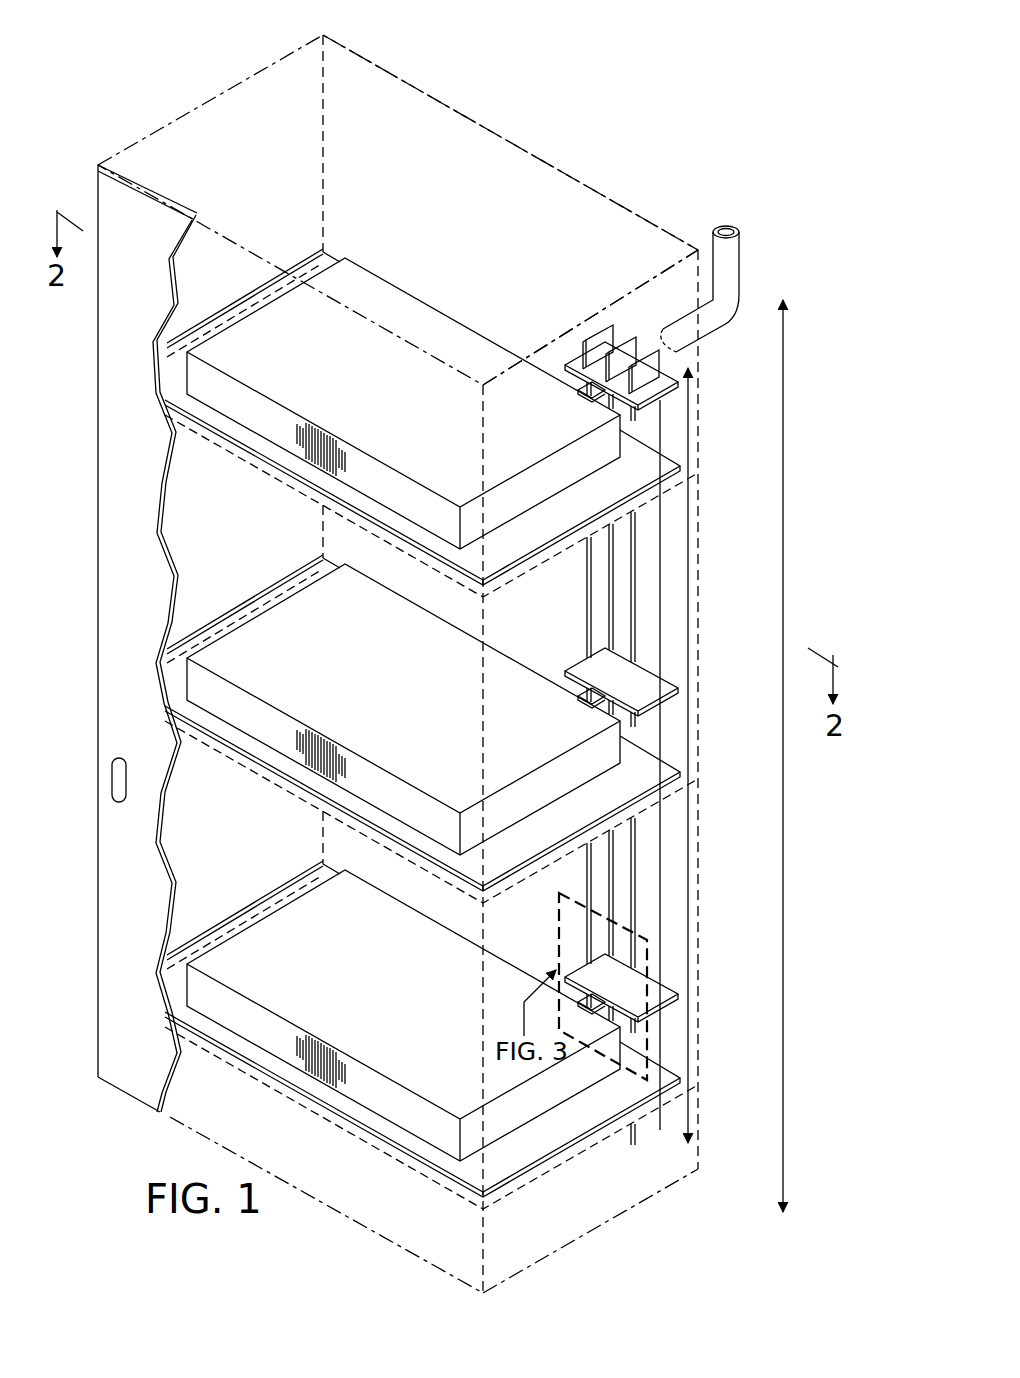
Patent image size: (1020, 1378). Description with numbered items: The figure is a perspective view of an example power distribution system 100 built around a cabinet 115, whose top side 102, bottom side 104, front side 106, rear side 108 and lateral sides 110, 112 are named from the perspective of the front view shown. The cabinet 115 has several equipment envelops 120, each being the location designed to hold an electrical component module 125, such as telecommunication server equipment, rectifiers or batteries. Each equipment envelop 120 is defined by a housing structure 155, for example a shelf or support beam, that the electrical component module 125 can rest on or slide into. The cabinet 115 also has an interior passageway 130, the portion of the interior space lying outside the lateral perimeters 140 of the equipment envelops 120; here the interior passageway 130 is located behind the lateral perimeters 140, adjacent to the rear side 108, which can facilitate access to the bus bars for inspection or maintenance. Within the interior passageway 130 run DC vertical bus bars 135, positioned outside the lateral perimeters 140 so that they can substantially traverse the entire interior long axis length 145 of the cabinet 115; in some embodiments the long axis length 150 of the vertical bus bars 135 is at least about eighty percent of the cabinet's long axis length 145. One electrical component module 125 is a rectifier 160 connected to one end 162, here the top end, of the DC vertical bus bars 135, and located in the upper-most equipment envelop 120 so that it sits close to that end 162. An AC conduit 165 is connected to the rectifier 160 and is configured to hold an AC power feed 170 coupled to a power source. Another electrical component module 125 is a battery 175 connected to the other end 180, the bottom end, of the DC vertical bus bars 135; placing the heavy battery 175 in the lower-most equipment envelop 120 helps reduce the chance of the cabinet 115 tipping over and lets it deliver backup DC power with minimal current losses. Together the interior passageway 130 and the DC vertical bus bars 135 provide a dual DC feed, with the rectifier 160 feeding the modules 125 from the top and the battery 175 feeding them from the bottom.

The power distribution system 100 is at (718, 92).
The top side 102 is at (272, 78).
The bottom side 104 is at (362, 1207).
The front side 106 is at (132, 1083).
The rear side 108 is at (445, 127).
The lateral side 110 is at (202, 127).
The lateral side 112 is at (592, 1230).
The cabinet 115 is at (545, 166).
The equipment envelop 120 is at (312, 474).
The electrical component module 125 is at (403, 702).
The interior passageway 130 is at (210, 278).
The DC vertical bus bars 135 is at (597, 606).
The lateral perimeter 140 is at (245, 461).
The interior long axis length 145 is at (786, 930).
The long axis length 150 is at (690, 564).
The housing structure 155 is at (423, 708).
The rectifier 160 is at (423, 398).
The end of the DC vertical bus bars 162 is at (641, 330).
The AC conduit 165 is at (741, 253).
The AC power feed 170 is at (576, 403).
The battery 175 is at (423, 1016).
The other end of the DC vertical bus bars 180 is at (612, 1153).